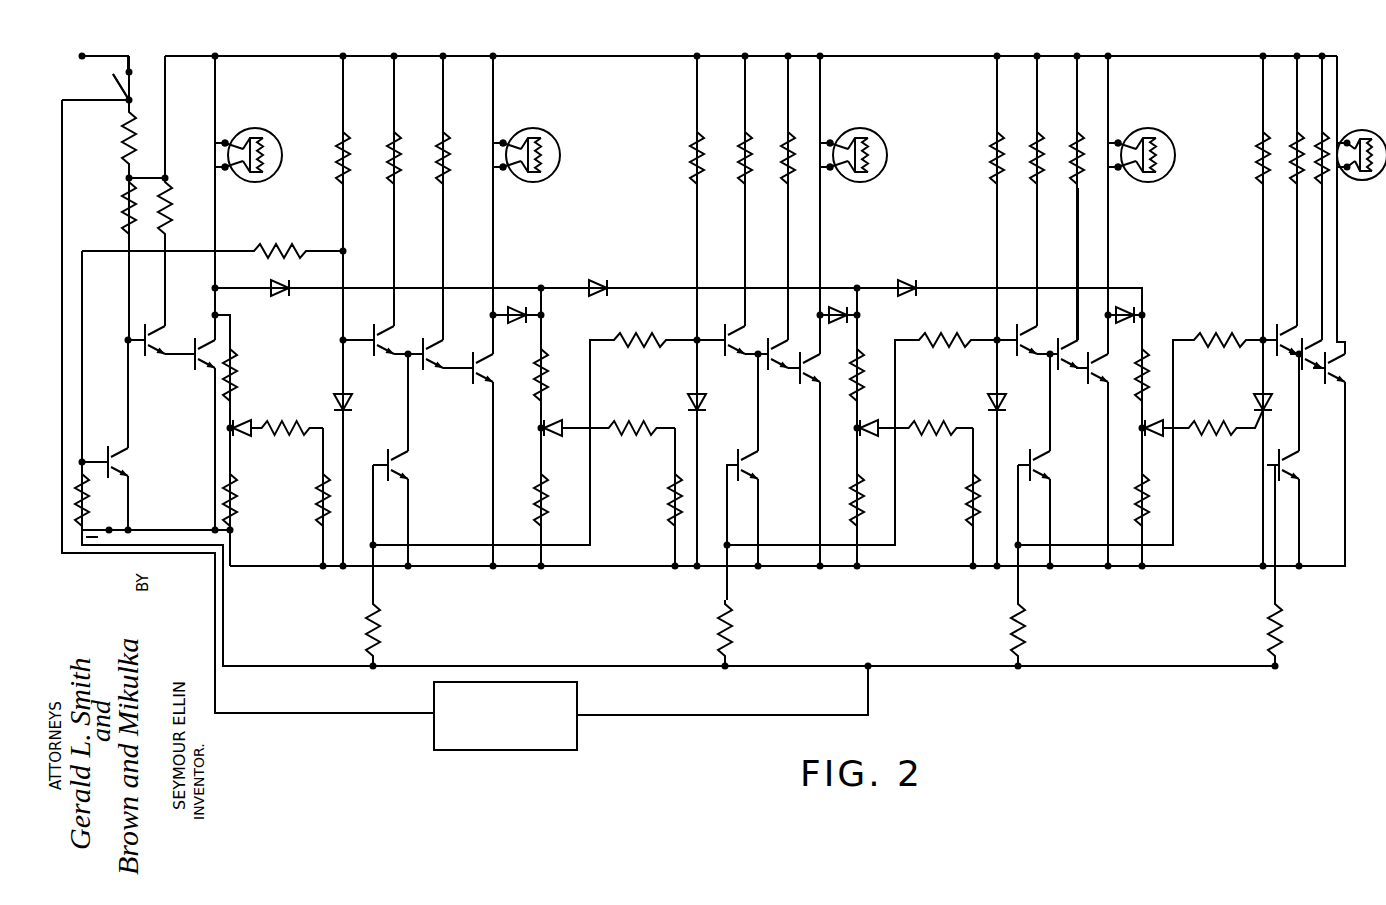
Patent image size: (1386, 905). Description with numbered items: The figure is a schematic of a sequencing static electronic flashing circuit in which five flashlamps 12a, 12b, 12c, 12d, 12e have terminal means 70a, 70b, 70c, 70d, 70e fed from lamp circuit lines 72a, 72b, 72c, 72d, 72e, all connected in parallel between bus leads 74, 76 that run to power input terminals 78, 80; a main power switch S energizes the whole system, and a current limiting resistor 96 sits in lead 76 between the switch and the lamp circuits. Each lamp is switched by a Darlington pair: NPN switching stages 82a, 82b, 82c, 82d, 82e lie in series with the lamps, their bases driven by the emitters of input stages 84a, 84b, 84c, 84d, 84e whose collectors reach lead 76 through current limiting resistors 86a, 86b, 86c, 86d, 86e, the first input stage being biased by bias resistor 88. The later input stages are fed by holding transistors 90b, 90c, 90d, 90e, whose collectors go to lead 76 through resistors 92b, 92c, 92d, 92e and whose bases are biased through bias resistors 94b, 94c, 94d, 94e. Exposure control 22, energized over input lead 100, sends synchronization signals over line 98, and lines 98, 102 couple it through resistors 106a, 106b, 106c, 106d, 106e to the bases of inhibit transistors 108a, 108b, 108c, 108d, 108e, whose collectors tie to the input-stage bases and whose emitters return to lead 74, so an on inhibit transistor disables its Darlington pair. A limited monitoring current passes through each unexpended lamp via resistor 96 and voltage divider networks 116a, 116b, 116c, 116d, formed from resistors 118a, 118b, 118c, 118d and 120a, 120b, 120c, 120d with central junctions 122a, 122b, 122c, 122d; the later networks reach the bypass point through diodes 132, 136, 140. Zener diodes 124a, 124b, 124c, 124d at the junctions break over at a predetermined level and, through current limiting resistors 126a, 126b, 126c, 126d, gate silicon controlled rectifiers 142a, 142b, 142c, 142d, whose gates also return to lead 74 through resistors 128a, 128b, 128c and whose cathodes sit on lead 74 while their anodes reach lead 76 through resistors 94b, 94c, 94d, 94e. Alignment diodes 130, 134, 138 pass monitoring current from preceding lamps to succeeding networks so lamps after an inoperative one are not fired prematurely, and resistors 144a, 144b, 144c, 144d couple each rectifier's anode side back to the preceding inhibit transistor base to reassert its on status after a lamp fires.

The exposure control 22 is at (578, 730).
The power lead 76 is at (864, 56).
The power lead 74 is at (231, 544).
The power input terminal 80 is at (88, 48).
The main power switch S is at (130, 76).
The current limiting resistor 96 is at (126, 133).
The bias resistor 88 is at (122, 201).
The power input terminal 78 is at (109, 528).
The line 102 is at (223, 606).
The input lead 100 is at (260, 712).
The line 98 is at (724, 720).
The diode 130 is at (280, 296).
The diode 132 is at (516, 326).
The diode 134 is at (596, 278).
The diode 136 is at (832, 306).
The diode 138 is at (898, 278).
The diode 140 is at (1136, 296).
The flashlamp 12a is at (270, 138).
The flashlamp 12b is at (551, 136).
The flashlamp 12c is at (882, 136).
The flashlamp 12d is at (1170, 134).
The flashlamp 12e is at (1370, 188).
The terminal means 70a is at (226, 173).
The terminal means 70b is at (504, 174).
The terminal means 70c is at (832, 174).
The terminal means 70d is at (1120, 174).
The terminal means 70e is at (1347, 170).
The lamp circuit line 72a is at (215, 237).
The lamp circuit line 72b is at (493, 240).
The lamp circuit line 72c is at (820, 244).
The lamp circuit line 72d is at (1108, 244).
The lamp circuit line 72e is at (1354, 250).
The switching transistor stage 82a is at (193, 374).
The switching transistor stage 82b is at (470, 386).
The switching transistor stage 82c is at (802, 390).
The switching transistor stage 82d is at (1088, 386).
The switching transistor stage 82e is at (1338, 372).
The input transistor stage 84a is at (159, 297).
The input transistor stage 84b is at (430, 370).
The input transistor stage 84c is at (778, 370).
The input transistor stage 84d is at (1064, 350).
The input transistor stage 84e is at (1322, 378).
The current limiting resistor 86a is at (168, 212).
The current limiting resistor 86b is at (442, 136).
The current limiting resistor 86c is at (786, 136).
The current limiting resistor 86d is at (1074, 142).
The current limiting resistor 86e is at (1318, 186).
The holding transistor 90b is at (368, 326).
The holding transistor 90c is at (720, 328).
The holding transistor 90d is at (1014, 326).
The holding transistor 90e is at (1270, 348).
The current limiting resistor 92b is at (391, 136).
The current limiting resistor 92c is at (742, 136).
The current limiting resistor 92d is at (1034, 136).
The current limiting resistor 92e is at (1294, 132).
The bias resistor 94b is at (342, 142).
The bias resistor 94c is at (694, 144).
The bias resistor 94d is at (996, 144).
The bias resistor 94e is at (1262, 152).
The bias resistor 106a is at (88, 472).
The bias resistor 106b is at (378, 618).
The bias resistor 106c is at (730, 618).
The bias resistor 106d is at (1028, 618).
The bias resistor 106e is at (1283, 618).
The inhibit transistor 108a is at (120, 462).
The inhibit transistor 108b is at (402, 478).
The inhibit transistor 108c is at (730, 464).
The inhibit transistor 108d is at (1043, 456).
The inhibit transistor 108e is at (1284, 460).
The voltage divider network 116a is at (240, 402).
The voltage divider network 116b is at (594, 405).
The voltage divider network 116c is at (896, 386).
The voltage divider network 116d is at (1174, 398).
The voltage dividing resistor 118a is at (232, 356).
The voltage dividing resistor 118b is at (541, 372).
The voltage dividing resistor 118c is at (862, 358).
The voltage dividing resistor 118d is at (1146, 360).
The voltage dividing resistor 120a is at (236, 480).
The voltage dividing resistor 120b is at (556, 482).
The voltage dividing resistor 120c is at (870, 482).
The voltage dividing resistor 120d is at (1162, 478).
The central junction 122a is at (226, 430).
The central junction 122b is at (540, 430).
The central junction 122c is at (852, 432).
The central junction 122d is at (1138, 430).
The Zener diode 124a is at (250, 424).
The Zener diode 124b is at (552, 422).
The Zener diode 124c is at (884, 424).
The Zener diode 124d is at (1162, 440).
The current limiting resistor 126a is at (290, 436).
The current limiting resistor 126b is at (638, 436).
The current limiting resistor 126c is at (944, 436).
The current limiting resistor 126d is at (1238, 436).
The current limiting resistor 128a is at (320, 503).
The current limiting resistor 128b is at (674, 510).
The current limiting resistor 128c is at (972, 508).
The gate controlled switching means 142a is at (351, 404).
The gate controlled switching means 142b is at (703, 404).
The gate controlled switching means 142c is at (1004, 408).
The gate controlled switching means 142d is at (1254, 400).
The current limiting resistor 144a is at (268, 250).
The current limiting resistor 144b is at (629, 332).
The current limiting resistor 144c is at (961, 334).
The current limiting resistor 144d is at (1238, 330).